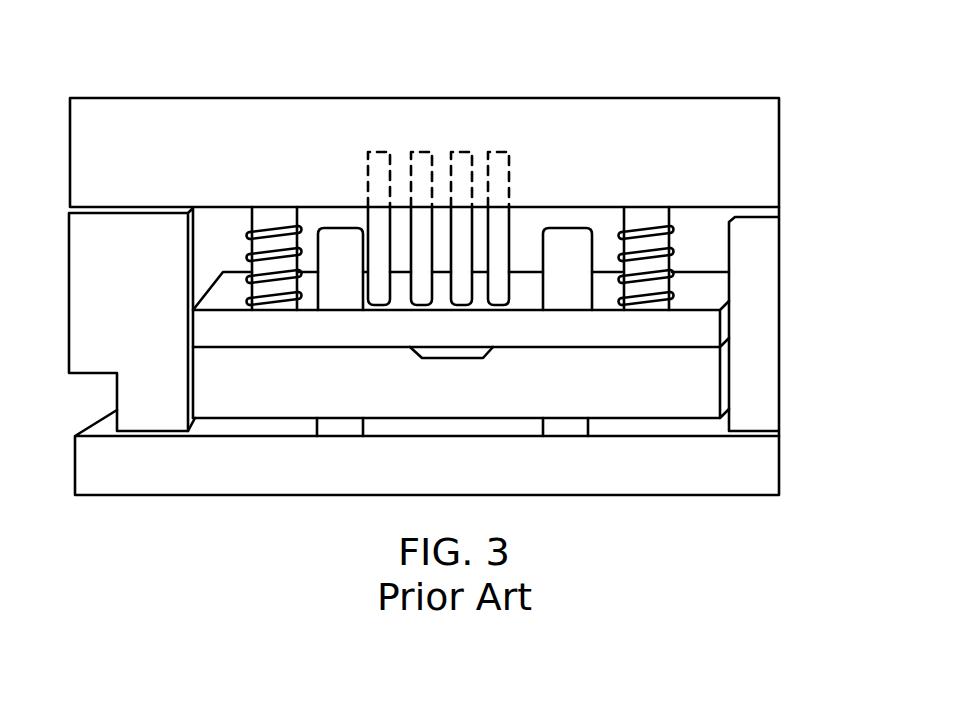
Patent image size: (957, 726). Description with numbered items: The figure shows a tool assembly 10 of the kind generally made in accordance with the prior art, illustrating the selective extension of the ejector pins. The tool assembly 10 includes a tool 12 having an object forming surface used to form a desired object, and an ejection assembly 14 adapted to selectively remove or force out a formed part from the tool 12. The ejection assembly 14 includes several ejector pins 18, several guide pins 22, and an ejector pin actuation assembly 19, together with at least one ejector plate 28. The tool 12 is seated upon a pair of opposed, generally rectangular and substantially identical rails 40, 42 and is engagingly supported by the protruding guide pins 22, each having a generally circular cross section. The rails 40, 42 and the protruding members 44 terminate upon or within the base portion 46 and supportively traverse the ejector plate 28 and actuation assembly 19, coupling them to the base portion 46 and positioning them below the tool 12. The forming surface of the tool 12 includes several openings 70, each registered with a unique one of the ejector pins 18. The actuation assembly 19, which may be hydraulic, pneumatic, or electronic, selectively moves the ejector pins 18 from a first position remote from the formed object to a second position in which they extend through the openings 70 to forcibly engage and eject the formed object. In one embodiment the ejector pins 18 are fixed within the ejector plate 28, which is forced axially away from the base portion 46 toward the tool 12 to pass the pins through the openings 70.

The tool assembly 10 is at (461, 137).
The tool 12 is at (574, 165).
The ejection assembly 14 is at (461, 265).
The ejector pins 18 is at (420, 170).
The ejector pin actuation assembly 19 is at (662, 410).
The guide pins 22 is at (277, 233).
The ejector plate 28 is at (662, 343).
The rail 40 is at (147, 310).
The rail 42 is at (768, 290).
The protruding members 44 is at (353, 285).
The base portion 46 is at (583, 478).
The openings 70 is at (461, 207).